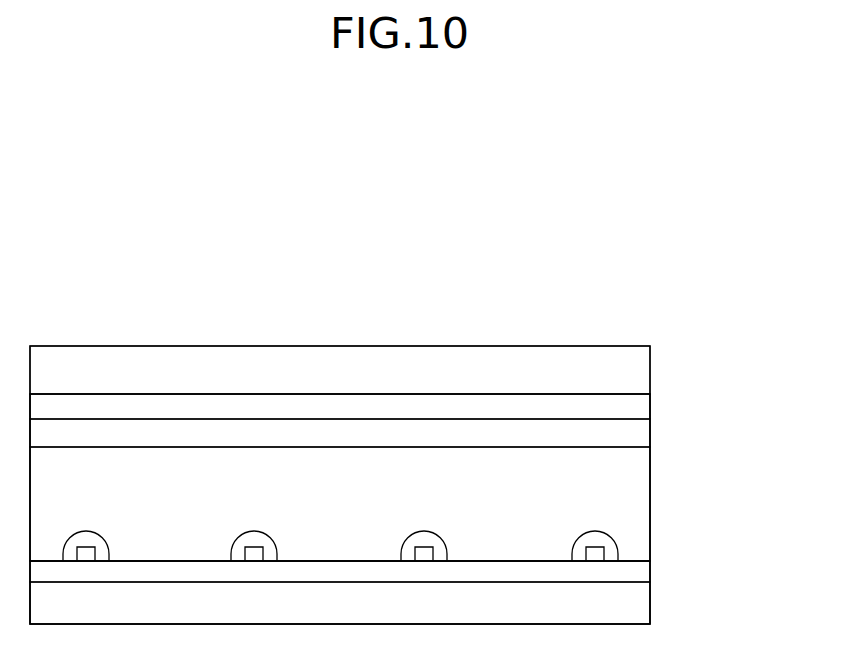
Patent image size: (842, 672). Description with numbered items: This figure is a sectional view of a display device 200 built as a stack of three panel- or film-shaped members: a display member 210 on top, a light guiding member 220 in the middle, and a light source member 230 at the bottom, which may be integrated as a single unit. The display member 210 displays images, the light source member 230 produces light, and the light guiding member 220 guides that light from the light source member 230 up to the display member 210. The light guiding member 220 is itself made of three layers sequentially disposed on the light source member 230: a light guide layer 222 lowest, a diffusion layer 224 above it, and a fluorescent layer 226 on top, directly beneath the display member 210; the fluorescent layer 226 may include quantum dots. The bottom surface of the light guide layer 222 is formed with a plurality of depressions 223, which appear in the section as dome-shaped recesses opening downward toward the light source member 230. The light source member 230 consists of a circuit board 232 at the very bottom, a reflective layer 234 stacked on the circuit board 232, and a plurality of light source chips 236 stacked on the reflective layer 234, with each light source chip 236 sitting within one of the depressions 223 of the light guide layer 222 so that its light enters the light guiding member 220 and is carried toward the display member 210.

The display device 200 is at (386, 255).
The display member 210 is at (634, 372).
The light guiding member 220 is at (716, 398).
The fluorescent layer 226 is at (634, 409).
The diffusion layer 224 is at (634, 435).
The light guide layer 222 is at (634, 483).
The depressions 223 is at (603, 532).
The light source member 230 is at (716, 535).
The light source chips 236 is at (592, 551).
The reflective layer 234 is at (634, 575).
The circuit board 232 is at (634, 605).